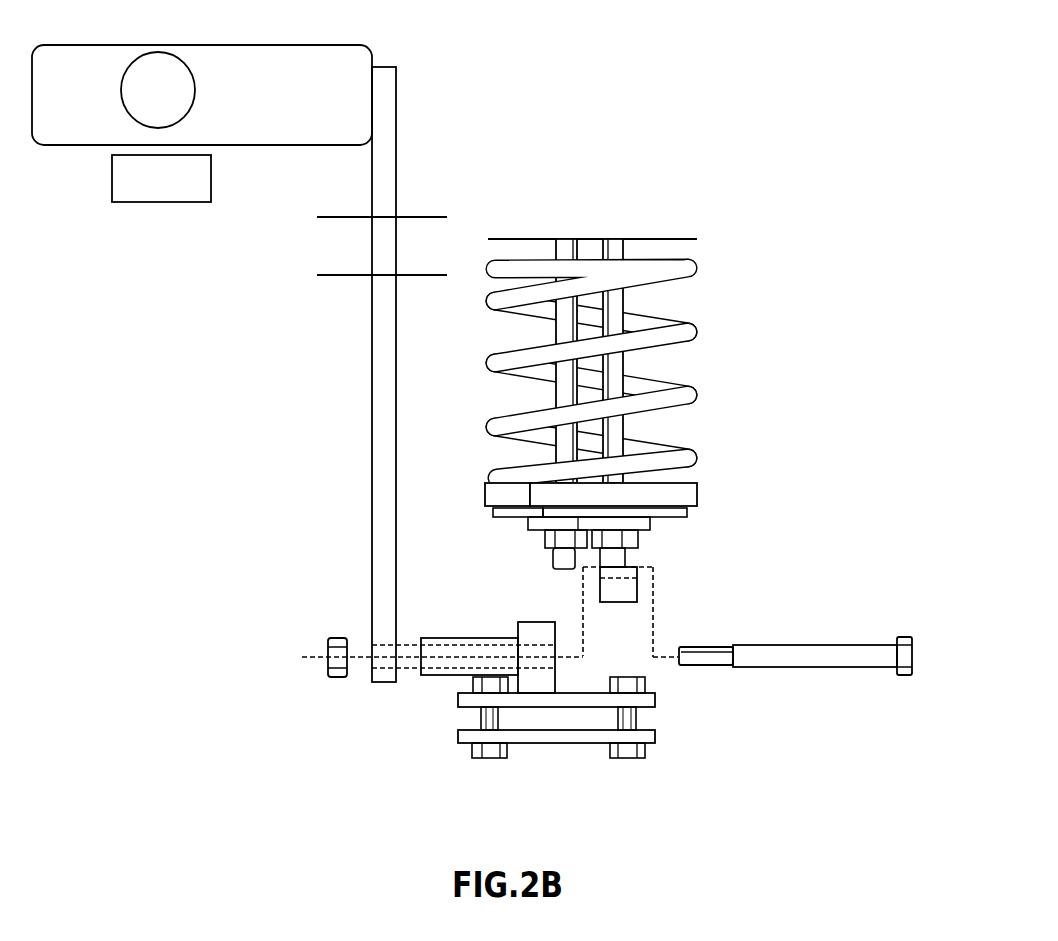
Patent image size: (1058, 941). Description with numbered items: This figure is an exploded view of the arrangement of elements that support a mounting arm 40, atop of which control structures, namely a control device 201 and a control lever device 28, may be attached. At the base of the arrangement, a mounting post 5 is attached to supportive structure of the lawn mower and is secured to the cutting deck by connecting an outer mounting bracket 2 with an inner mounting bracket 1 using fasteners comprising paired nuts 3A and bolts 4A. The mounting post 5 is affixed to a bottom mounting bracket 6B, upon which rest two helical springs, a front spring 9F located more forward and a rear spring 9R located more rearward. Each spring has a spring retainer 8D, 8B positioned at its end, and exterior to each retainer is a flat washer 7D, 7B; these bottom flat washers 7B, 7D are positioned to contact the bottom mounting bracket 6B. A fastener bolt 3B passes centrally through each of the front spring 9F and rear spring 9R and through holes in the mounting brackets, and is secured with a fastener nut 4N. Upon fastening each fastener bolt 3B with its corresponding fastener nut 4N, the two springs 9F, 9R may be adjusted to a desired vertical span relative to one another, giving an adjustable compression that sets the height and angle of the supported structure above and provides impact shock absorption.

The control device 201 is at (263, 57).
The control lever device 28 is at (193, 193).
The mounting arm 40 is at (380, 385).
The fastener bolt 3B is at (565, 326).
The rear spring 9R is at (502, 363).
The front spring 9F is at (678, 398).
The spring retainer 8D is at (485, 492).
The spring retainer 8B is at (697, 492).
The flat washer 7D is at (497, 511).
The flat washer 7B is at (685, 512).
The bottom mounting bracket 6B is at (640, 522).
The fastener nut 4N is at (545, 540).
The mounting post 5 is at (534, 622).
The nut 3A is at (473, 685).
The outer mounting bracket 2 is at (458, 701).
The inner mounting bracket 1 is at (458, 738).
The bolt 4A is at (485, 757).